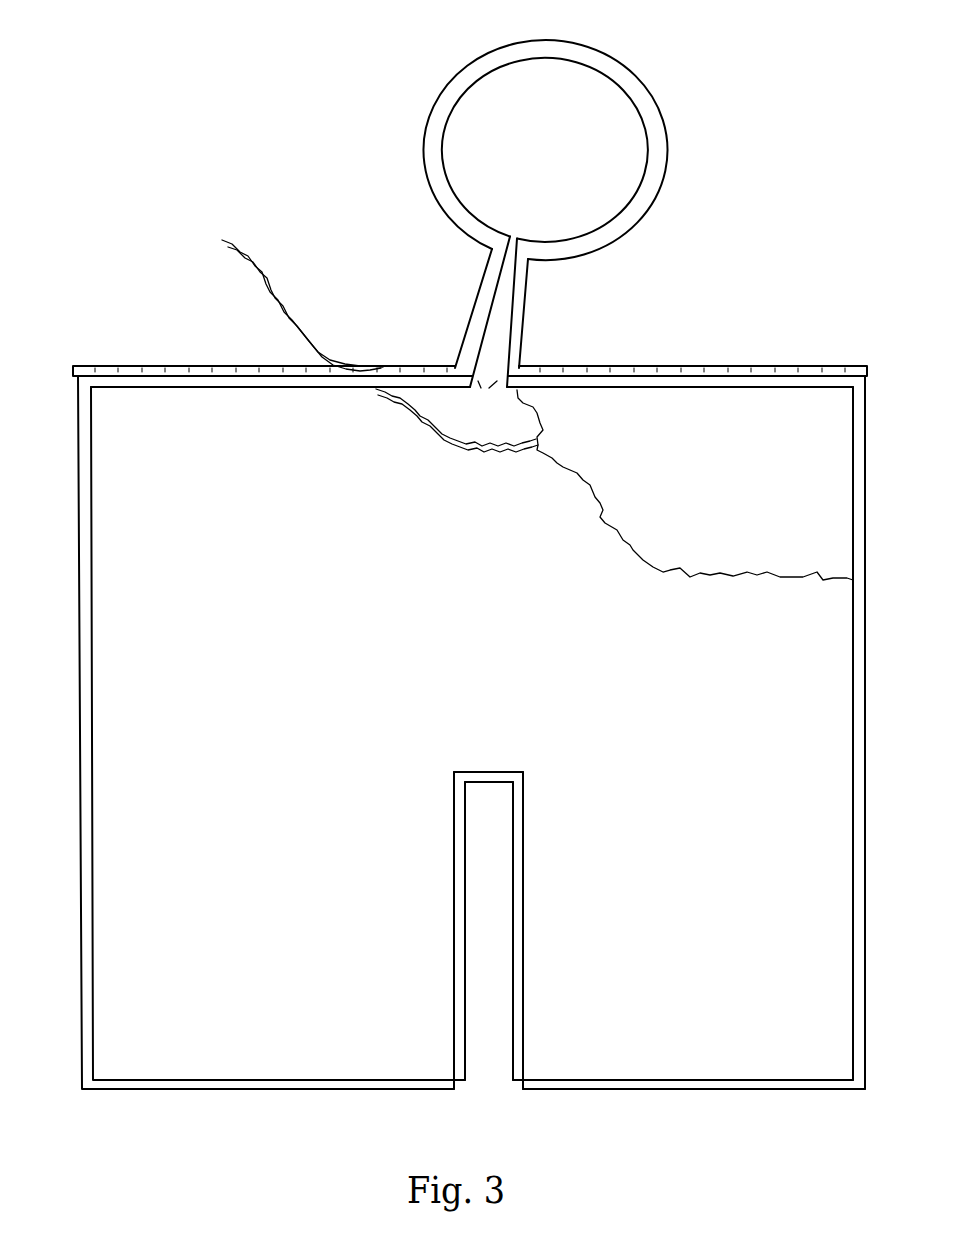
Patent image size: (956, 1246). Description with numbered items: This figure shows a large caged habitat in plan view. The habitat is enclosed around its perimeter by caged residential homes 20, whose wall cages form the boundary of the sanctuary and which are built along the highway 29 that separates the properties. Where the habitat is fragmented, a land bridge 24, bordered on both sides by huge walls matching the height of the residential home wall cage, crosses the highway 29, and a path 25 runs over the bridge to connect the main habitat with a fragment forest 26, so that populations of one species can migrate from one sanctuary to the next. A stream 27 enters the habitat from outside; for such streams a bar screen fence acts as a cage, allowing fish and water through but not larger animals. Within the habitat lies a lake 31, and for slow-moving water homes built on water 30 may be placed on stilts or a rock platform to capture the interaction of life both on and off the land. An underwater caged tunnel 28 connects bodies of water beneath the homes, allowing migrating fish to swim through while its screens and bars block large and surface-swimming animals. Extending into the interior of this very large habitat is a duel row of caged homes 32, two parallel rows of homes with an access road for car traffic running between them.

The caged residential homes 20 is at (105, 468).
The land bridge 24 is at (486, 401).
The path 25 is at (509, 256).
The fragment forest 26 is at (532, 162).
The stream 27 is at (246, 280).
The underwater caged tunnel 28 is at (372, 393).
The highway 29 is at (748, 348).
The homes built on water 30 is at (845, 442).
The lake 31 is at (709, 501).
The duel row of caged homes 32 is at (472, 1095).